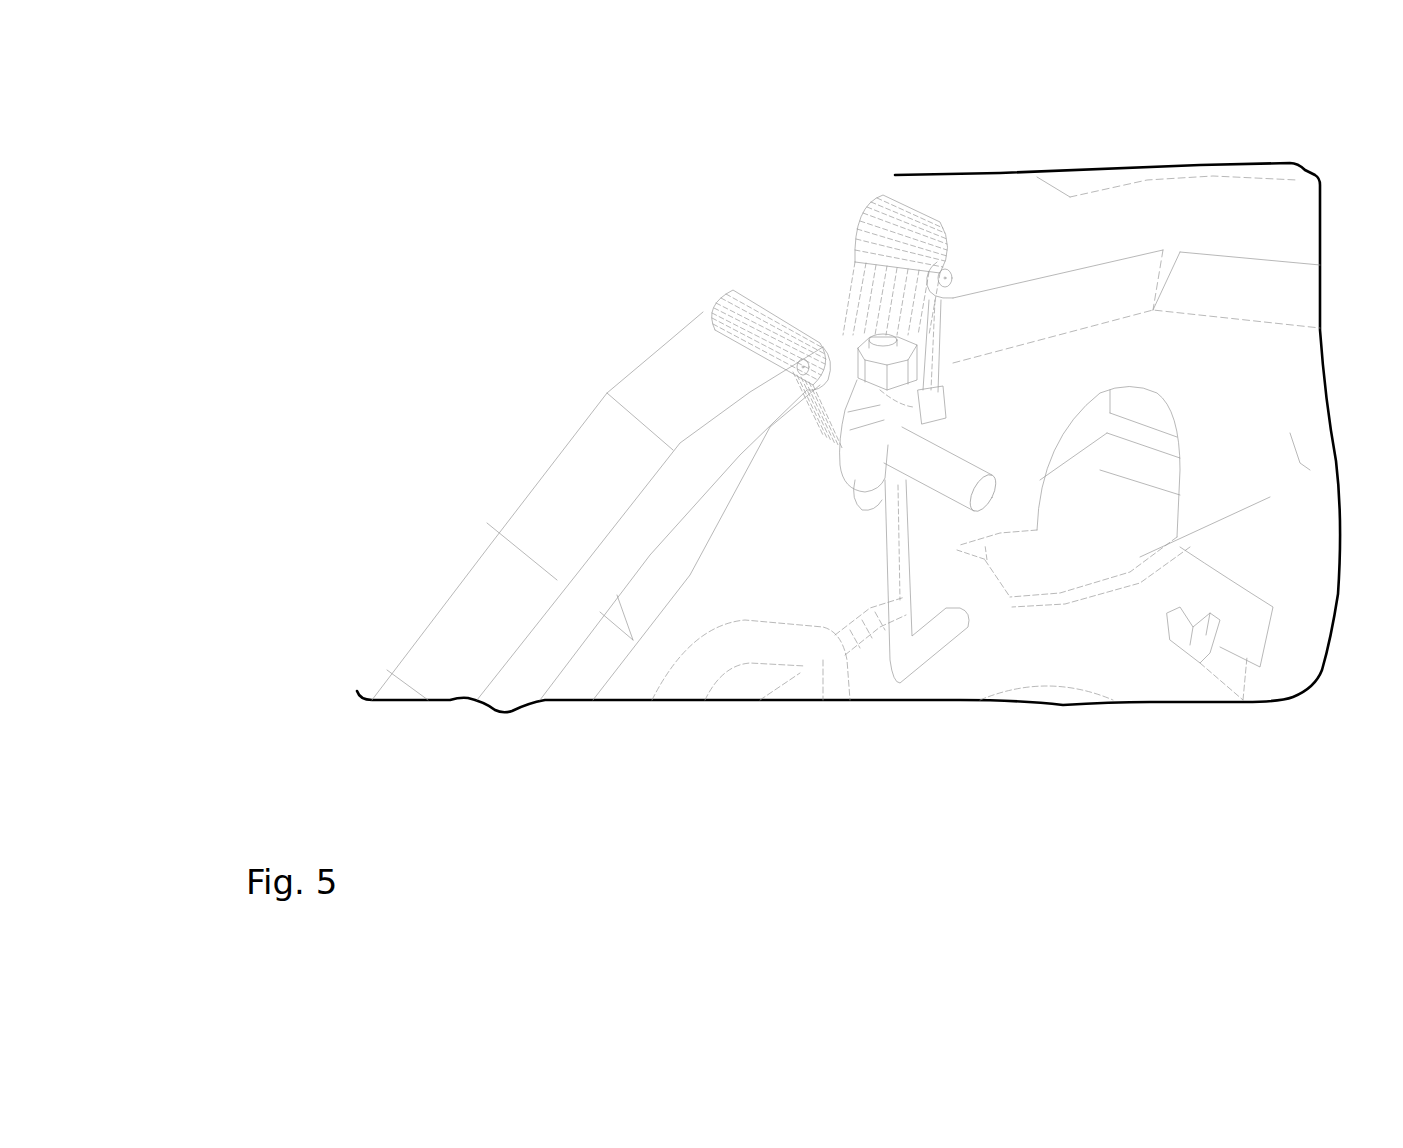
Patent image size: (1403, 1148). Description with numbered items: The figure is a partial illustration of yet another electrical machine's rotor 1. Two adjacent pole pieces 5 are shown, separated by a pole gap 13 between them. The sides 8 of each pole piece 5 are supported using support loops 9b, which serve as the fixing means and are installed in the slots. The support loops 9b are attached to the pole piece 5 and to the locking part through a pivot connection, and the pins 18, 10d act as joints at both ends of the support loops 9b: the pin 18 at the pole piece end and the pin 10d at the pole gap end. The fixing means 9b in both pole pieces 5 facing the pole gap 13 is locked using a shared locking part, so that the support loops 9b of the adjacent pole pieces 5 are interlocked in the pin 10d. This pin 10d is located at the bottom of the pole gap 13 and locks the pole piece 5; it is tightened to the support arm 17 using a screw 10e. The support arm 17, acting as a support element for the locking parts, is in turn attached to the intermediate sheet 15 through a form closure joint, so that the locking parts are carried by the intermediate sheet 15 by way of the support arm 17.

The rotor 1 is at (402, 440).
The pole piece 5 is at (570, 538).
The side 8 is at (858, 232).
The support loop 9b is at (927, 323).
The pin 10d is at (978, 513).
The screw 10e is at (888, 402).
The pole gap 13 is at (860, 500).
The intermediate sheet 15 is at (1163, 660).
The support arm 17 is at (925, 593).
The pin 18 is at (945, 278).